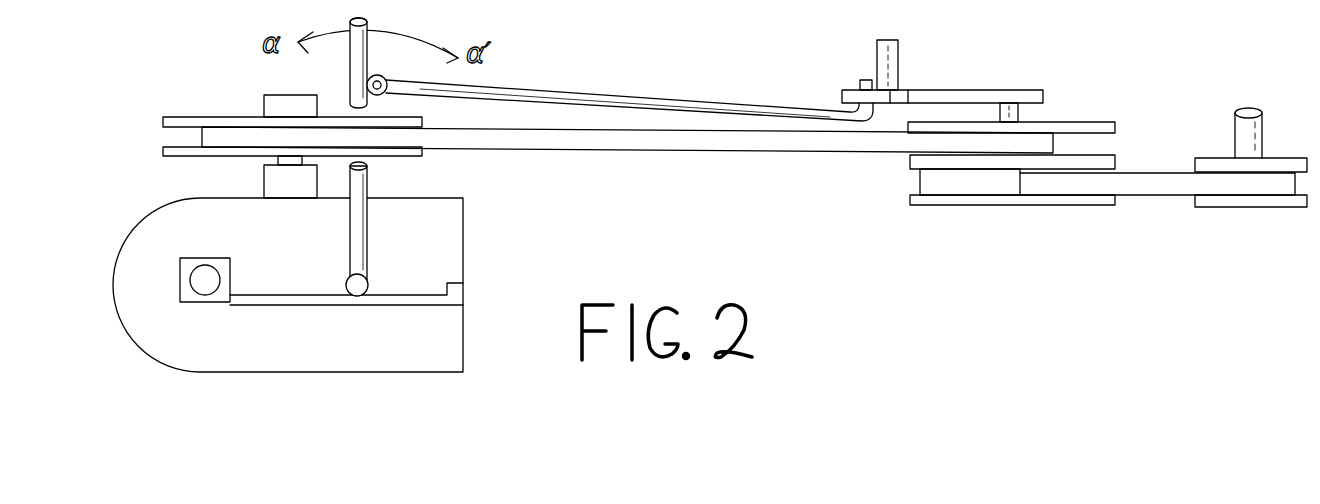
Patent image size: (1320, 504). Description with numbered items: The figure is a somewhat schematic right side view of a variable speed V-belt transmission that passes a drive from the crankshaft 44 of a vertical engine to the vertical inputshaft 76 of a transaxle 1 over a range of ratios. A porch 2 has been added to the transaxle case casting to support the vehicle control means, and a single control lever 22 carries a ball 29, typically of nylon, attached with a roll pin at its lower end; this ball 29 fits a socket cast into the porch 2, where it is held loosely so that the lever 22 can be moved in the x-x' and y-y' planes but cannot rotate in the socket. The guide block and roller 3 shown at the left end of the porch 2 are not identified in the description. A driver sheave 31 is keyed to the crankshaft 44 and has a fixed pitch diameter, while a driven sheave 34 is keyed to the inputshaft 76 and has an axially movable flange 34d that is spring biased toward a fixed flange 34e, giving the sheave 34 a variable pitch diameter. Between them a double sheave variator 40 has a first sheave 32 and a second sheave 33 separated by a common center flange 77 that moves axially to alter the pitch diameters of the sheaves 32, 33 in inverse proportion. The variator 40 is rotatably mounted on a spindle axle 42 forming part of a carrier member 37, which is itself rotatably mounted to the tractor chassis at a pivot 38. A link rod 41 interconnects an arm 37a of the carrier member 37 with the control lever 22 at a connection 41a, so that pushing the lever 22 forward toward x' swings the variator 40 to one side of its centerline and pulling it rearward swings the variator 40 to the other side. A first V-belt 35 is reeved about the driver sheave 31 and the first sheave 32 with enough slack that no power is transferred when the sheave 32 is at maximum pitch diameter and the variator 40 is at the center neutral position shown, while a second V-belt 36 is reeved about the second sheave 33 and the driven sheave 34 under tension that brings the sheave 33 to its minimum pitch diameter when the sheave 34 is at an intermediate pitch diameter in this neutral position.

The transaxle 1 is at (450, 247).
The porch 2 is at (310, 298).
The guide block with roller 3 is at (205, 285).
The control lever 22 is at (367, 168).
The ball 29 is at (357, 290).
The driver sheave 31 is at (1245, 205).
The first sheave 32 is at (1080, 200).
The second sheave 33 is at (1107, 130).
The driven sheave 34 is at (187, 117).
The axially movable flange 34d is at (238, 117).
The fixed flange 34e is at (170, 164).
The first V-belt 35 is at (1160, 188).
The second V-belt 36 is at (627, 143).
The carrier member 37 is at (960, 97).
The arm 37a is at (843, 92).
The pivot 38 is at (887, 43).
The double sheave variator 40 is at (1015, 163).
The link rod 41 is at (640, 102).
The link rod connection 41a is at (393, 67).
The spindle axle 42 is at (1012, 117).
The crankshaft 44 is at (1253, 125).
The inputshaft 76 is at (282, 163).
The center flange 77 is at (1113, 163).